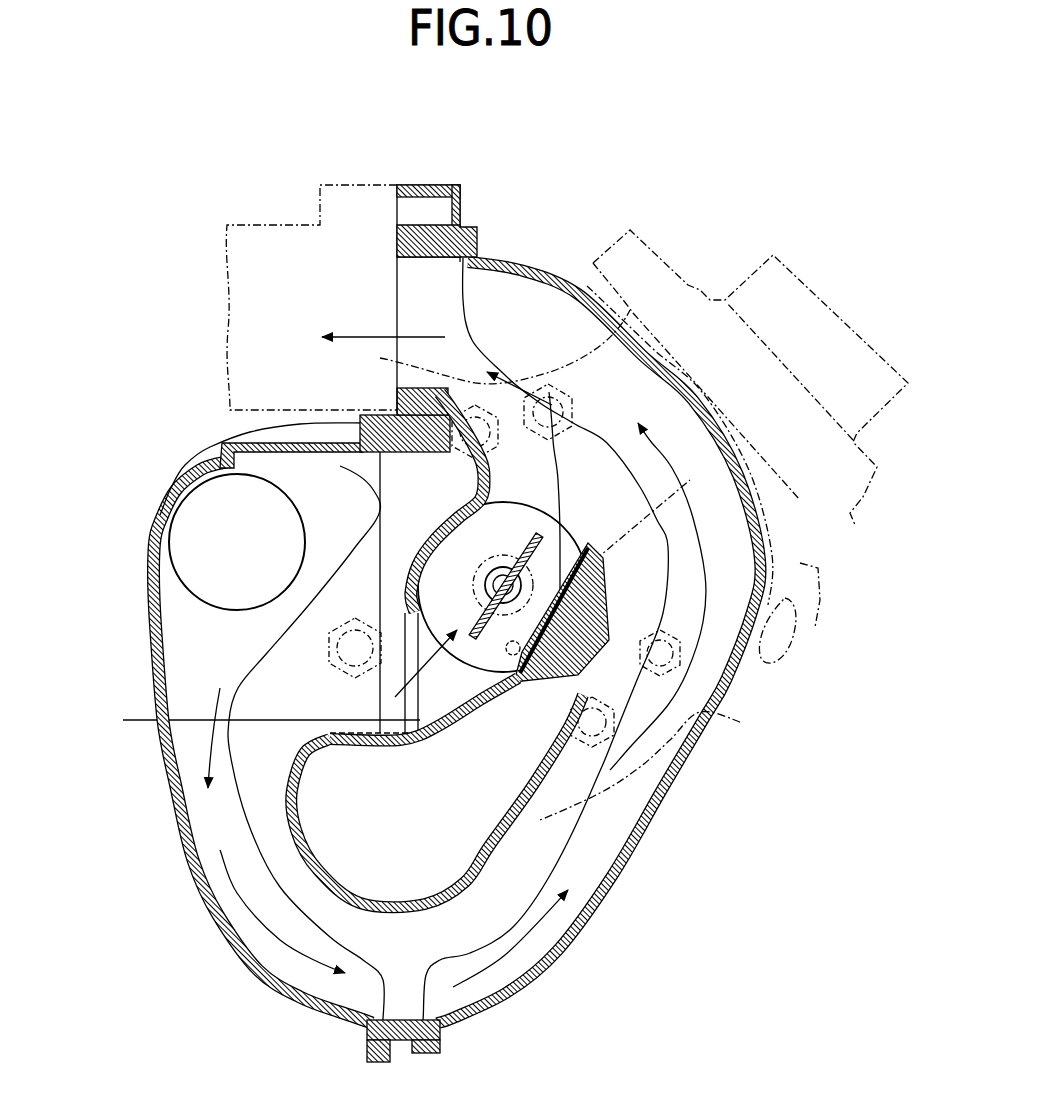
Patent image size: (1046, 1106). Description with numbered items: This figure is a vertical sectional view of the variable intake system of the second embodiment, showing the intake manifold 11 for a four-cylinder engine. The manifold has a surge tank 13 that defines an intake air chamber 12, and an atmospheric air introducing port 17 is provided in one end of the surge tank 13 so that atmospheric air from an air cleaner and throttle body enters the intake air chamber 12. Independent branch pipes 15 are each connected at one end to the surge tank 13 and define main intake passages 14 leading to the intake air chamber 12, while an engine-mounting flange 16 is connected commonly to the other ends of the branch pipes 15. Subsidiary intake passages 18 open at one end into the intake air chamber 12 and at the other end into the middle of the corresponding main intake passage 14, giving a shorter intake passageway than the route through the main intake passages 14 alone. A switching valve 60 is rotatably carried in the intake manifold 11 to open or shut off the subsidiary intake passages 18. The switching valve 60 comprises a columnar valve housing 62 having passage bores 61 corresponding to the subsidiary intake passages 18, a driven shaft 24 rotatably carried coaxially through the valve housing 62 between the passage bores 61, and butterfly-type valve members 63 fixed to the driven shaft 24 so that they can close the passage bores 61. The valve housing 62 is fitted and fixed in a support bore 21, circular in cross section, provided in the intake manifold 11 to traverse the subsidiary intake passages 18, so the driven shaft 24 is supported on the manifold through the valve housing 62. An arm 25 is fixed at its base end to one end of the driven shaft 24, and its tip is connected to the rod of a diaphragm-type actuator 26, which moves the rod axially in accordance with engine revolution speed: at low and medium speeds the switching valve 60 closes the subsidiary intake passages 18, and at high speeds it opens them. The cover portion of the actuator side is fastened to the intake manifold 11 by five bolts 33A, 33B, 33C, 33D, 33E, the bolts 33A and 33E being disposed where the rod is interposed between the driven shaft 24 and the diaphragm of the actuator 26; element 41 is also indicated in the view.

The intake manifold 11 is at (898, 270).
The intake air chamber 12 is at (290, 699).
The surge tank 13 is at (142, 570).
The main intake passage 14 is at (623, 830).
The branch pipe 15 is at (697, 743).
The engine-mounting flange 16 is at (440, 188).
The atmospheric air introducing port 17 is at (182, 480).
The subsidiary intake passage 18 is at (476, 695).
The support bore 21 is at (447, 550).
The driven shaft 24 is at (503, 568).
The arm 25 is at (450, 673).
The actuator 26 is at (715, 278).
The bolt 33A is at (549, 392).
The bolt 33B is at (330, 737).
The bolt 33C is at (580, 750).
The bolt 33D is at (382, 357).
The bolt 33E is at (740, 722).
The inner wall 41 is at (550, 270).
The switching valve 60 is at (563, 507).
The passage bore 61 is at (560, 590).
The valve housing 62 is at (410, 687).
The valve member 63 is at (480, 613).